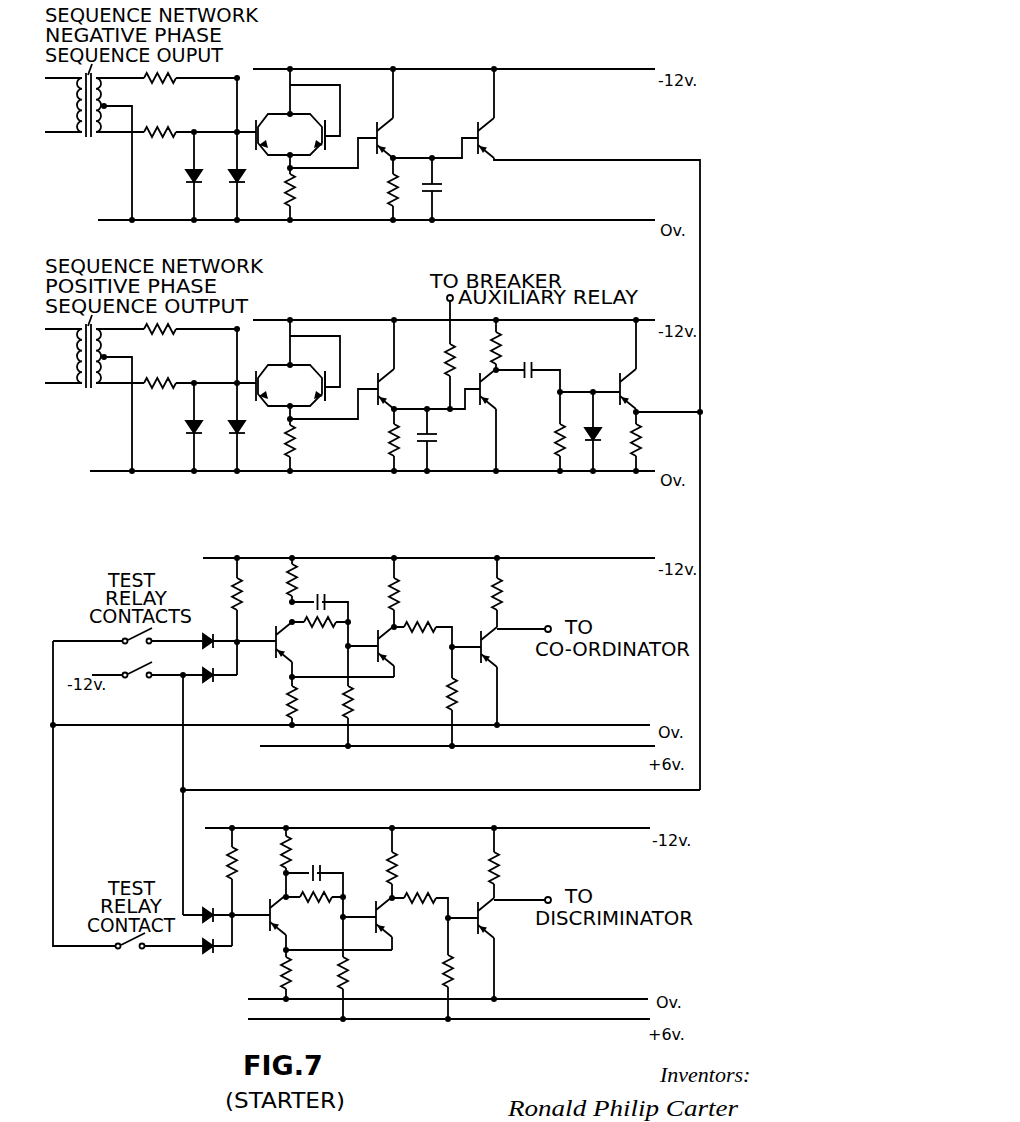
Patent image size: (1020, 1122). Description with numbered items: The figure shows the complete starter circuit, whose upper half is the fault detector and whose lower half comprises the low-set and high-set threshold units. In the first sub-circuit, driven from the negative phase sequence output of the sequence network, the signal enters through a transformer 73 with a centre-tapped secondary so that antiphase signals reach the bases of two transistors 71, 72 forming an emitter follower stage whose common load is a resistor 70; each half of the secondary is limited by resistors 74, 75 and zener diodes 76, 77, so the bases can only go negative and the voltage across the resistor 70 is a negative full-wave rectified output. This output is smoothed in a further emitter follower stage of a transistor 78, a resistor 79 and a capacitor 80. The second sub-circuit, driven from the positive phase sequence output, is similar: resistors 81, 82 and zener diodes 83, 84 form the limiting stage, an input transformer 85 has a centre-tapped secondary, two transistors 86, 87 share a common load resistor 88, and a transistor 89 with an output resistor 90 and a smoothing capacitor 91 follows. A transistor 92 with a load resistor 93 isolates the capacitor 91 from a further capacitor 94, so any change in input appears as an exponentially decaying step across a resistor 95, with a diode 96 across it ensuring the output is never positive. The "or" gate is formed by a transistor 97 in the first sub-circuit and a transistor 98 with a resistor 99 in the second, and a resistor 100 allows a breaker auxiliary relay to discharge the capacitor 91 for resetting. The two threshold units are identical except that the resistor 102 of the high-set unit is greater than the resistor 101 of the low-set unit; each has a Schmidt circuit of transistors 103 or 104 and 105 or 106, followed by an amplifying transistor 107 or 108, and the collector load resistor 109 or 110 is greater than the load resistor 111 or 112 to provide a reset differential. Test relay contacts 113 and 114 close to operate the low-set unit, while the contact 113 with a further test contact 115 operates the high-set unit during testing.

The resistor 70 is at (296, 191).
The transistor 71 is at (282, 146).
The transistor 72 is at (315, 146).
The transformer 73 is at (95, 159).
The resistor 74 is at (171, 87).
The resistor 75 is at (163, 140).
The zener diode 76 is at (240, 182).
The zener diode 77 is at (186, 180).
The transistor 78 is at (408, 149).
The resistor 79 is at (386, 191).
The capacitor 80 is at (441, 190).
The resistor 81 is at (166, 343).
The resistor 82 is at (160, 397).
The zener diode 83 is at (248, 433).
The zener diode 84 is at (180, 433).
The input transformer 85 is at (73, 367).
The transistor 86 is at (290, 385).
The transistor 87 is at (310, 386).
The common load resistor 88 is at (305, 441).
The transistor 89 is at (409, 400).
The output resistor 90 is at (387, 442).
The capacitor 91 is at (436, 440).
The transistor 92 is at (510, 400).
The load resistor 93 is at (502, 349).
The capacitor 94 is at (539, 380).
The resistor 95 is at (553, 442).
The diode 96 is at (598, 444).
The transistor 97 is at (509, 149).
The transistor 98 is at (650, 400).
The resistor 99 is at (642, 442).
The resistor 100 is at (446, 362).
The resistor 101 is at (297, 704).
The resistor 102 is at (292, 976).
The transistor 103 is at (310, 653).
The transistor 104 is at (307, 925).
The transistor 105 is at (413, 657).
The transistor 106 is at (412, 928).
The transistor 107 is at (516, 658).
The transistor 108 is at (515, 929).
The collector load resistor 109 is at (297, 584).
The collector load resistor 110 is at (292, 856).
The load resistor 111 is at (399, 589).
The load resistor 112 is at (397, 865).
The test relay contact 113 is at (133, 679).
The test relay contact 114 is at (129, 952).
The test contact 115 is at (129, 644).